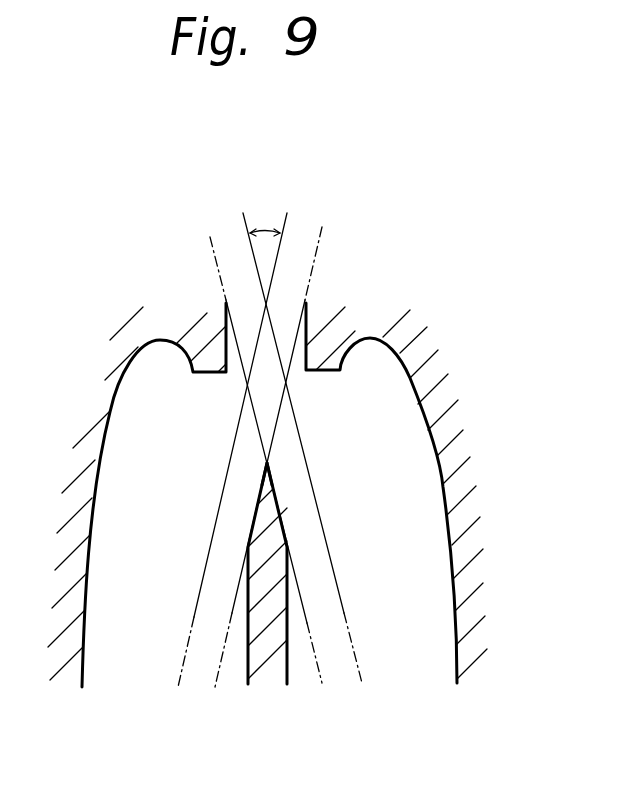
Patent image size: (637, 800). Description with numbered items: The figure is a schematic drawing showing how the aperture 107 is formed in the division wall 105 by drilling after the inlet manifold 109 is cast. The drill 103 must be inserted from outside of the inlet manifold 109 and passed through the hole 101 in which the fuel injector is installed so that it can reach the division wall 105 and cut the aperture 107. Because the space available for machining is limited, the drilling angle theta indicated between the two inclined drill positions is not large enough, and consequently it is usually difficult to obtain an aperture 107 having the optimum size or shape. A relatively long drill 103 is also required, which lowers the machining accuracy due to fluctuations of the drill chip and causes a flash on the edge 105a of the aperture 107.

The hole 101 is at (233, 367).
The drill 103 is at (188, 664).
The division wall 105 is at (287, 663).
The edge of the aperture 105a is at (265, 462).
The aperture 107 is at (267, 413).
The inlet manifold 109 is at (428, 573).